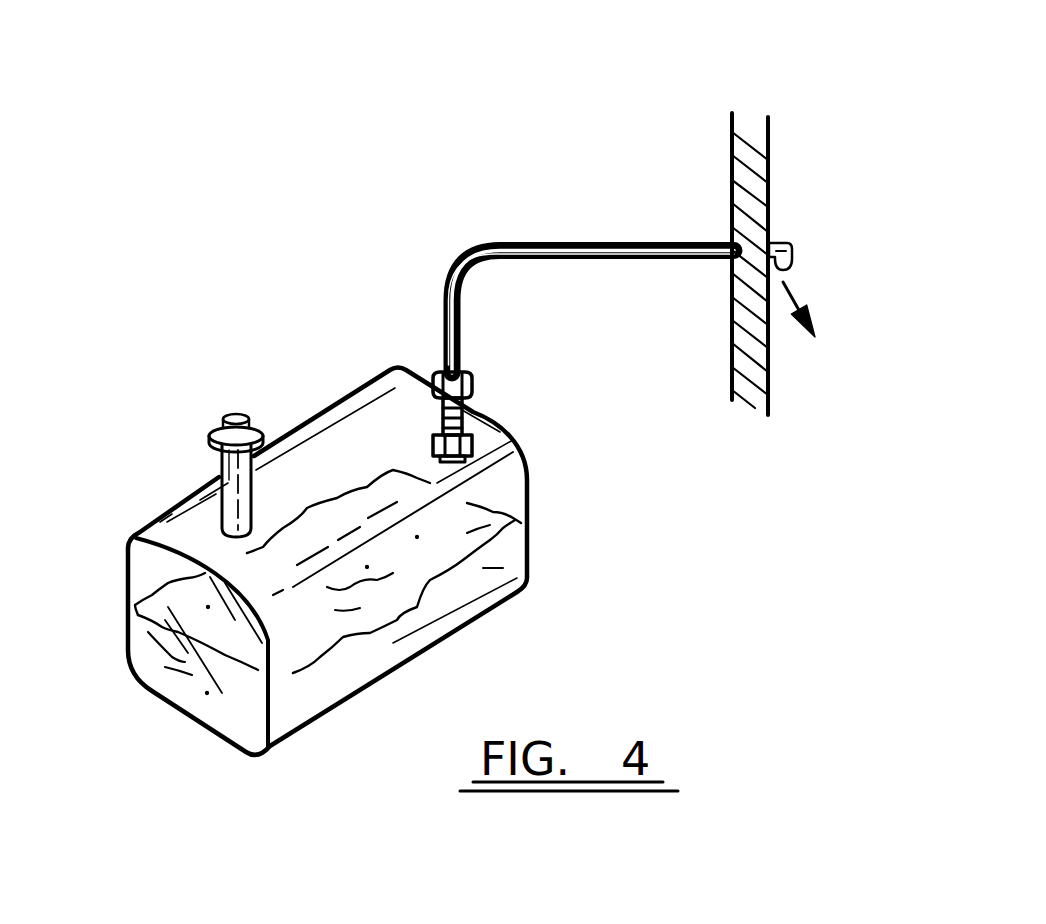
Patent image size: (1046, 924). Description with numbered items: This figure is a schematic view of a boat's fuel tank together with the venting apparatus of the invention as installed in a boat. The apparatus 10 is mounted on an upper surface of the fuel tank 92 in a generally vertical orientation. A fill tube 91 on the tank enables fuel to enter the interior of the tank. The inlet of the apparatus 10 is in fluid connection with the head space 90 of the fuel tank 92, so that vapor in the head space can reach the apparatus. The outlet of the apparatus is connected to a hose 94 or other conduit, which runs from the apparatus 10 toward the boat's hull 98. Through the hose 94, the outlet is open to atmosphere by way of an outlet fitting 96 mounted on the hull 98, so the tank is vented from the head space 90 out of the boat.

The apparatus 10 is at (472, 402).
The head space 90 is at (345, 455).
The fill tube 91 is at (220, 477).
The fuel tank 92 is at (532, 543).
The hose 94 is at (530, 242).
The outlet fitting 96 is at (782, 243).
The hull 98 is at (770, 372).